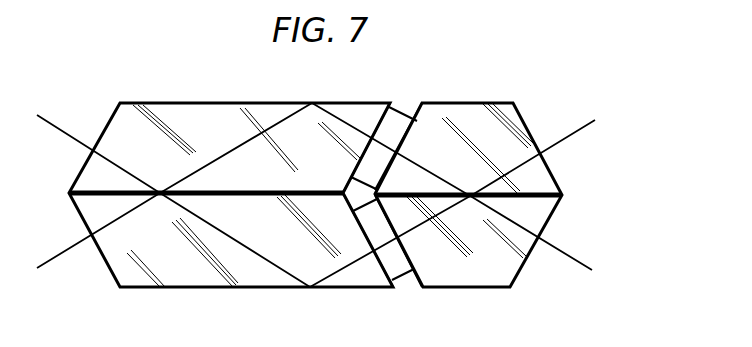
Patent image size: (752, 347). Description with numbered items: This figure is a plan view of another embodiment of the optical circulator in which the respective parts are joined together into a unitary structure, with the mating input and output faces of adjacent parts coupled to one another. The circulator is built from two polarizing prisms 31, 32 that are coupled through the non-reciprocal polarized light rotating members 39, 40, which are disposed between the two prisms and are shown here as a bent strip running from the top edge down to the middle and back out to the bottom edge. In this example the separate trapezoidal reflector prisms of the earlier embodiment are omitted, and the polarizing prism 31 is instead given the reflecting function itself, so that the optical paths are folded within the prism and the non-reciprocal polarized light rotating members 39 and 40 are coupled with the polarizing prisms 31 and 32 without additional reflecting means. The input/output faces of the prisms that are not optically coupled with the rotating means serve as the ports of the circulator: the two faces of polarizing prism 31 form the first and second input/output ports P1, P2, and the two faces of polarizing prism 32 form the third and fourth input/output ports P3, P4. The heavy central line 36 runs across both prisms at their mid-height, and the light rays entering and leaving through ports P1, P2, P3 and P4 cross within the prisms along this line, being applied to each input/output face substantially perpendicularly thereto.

The polarizing prism 31 is at (214, 103).
The polarizing prism 32 is at (478, 103).
The reflecting surface / interface line 36 is at (97, 190).
The non-reciprocal polarized light rotating member 39 is at (402, 113).
The non-reciprocal polarized light rotating member 40 is at (405, 281).
The first input/output port P1 is at (103, 125).
The second input/output port P2 is at (102, 260).
The third input/output port P3 is at (533, 135).
The fourth input/output port P4 is at (522, 272).